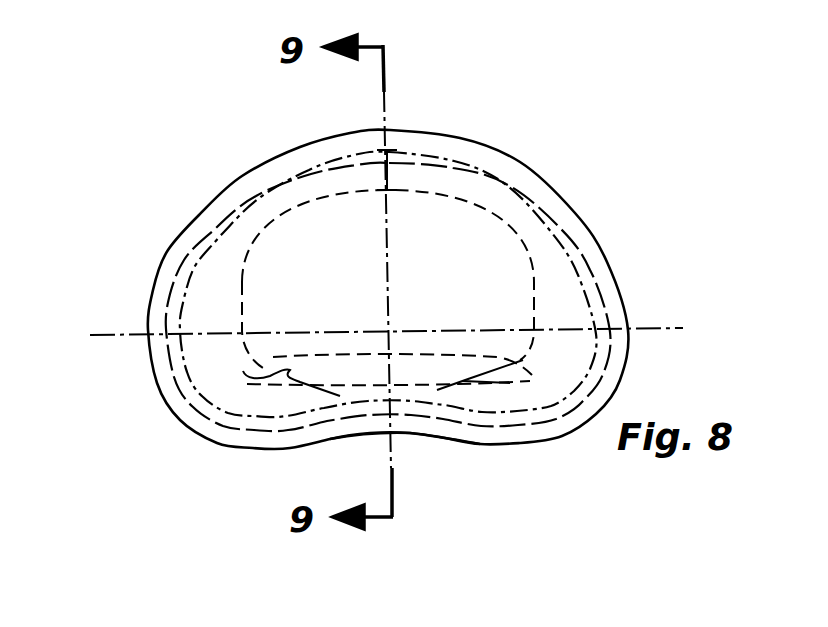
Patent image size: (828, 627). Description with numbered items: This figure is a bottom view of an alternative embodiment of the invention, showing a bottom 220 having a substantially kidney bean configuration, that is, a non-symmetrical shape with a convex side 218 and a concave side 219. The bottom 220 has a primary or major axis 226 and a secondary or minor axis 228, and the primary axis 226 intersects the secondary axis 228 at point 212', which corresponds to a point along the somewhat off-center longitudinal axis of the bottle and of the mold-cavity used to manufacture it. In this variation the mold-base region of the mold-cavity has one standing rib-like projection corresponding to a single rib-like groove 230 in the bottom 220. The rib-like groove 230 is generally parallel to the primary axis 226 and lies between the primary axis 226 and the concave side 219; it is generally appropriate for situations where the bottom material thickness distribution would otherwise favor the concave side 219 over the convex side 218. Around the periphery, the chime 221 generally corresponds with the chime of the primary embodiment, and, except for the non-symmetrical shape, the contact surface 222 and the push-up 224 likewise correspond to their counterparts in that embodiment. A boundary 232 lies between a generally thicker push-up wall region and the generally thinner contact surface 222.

The convex side 218 is at (415, 130).
The concave side 219 is at (407, 437).
The bottom 220 is at (160, 459).
The chime 221 is at (505, 163).
The contact surface 222 is at (568, 238).
The push-up 224 is at (471, 279).
The primary axis 226 is at (658, 327).
The secondary axis 228 is at (383, 108).
The rib-like groove 230 is at (410, 368).
The boundary 232 is at (253, 280).
The point 212' is at (207, 292).